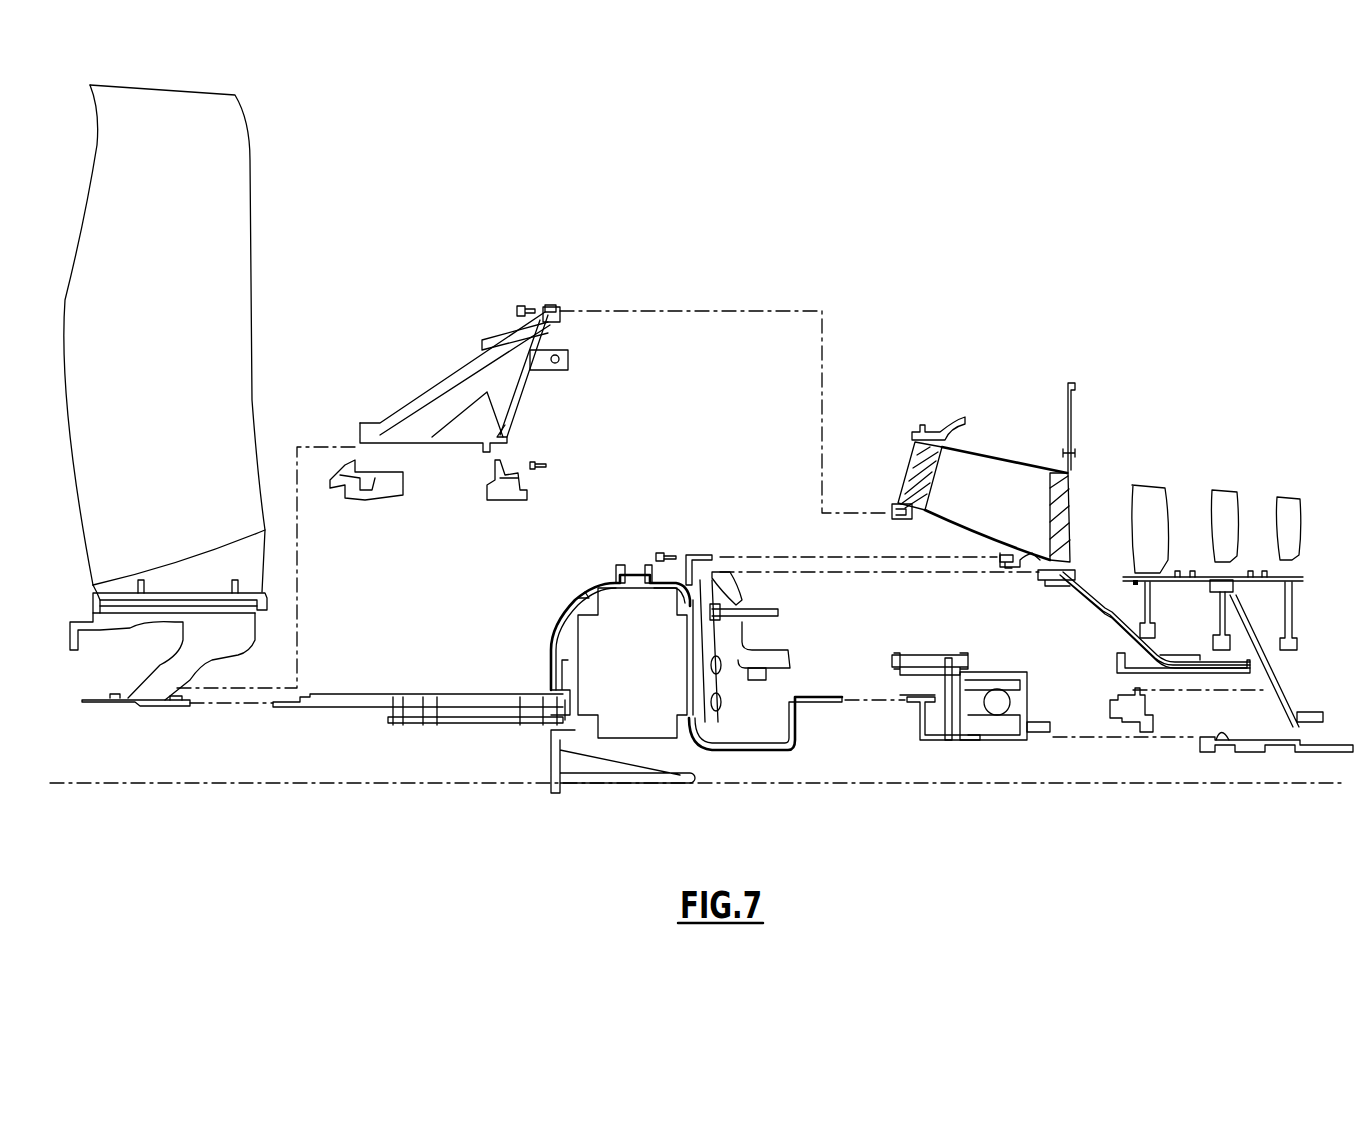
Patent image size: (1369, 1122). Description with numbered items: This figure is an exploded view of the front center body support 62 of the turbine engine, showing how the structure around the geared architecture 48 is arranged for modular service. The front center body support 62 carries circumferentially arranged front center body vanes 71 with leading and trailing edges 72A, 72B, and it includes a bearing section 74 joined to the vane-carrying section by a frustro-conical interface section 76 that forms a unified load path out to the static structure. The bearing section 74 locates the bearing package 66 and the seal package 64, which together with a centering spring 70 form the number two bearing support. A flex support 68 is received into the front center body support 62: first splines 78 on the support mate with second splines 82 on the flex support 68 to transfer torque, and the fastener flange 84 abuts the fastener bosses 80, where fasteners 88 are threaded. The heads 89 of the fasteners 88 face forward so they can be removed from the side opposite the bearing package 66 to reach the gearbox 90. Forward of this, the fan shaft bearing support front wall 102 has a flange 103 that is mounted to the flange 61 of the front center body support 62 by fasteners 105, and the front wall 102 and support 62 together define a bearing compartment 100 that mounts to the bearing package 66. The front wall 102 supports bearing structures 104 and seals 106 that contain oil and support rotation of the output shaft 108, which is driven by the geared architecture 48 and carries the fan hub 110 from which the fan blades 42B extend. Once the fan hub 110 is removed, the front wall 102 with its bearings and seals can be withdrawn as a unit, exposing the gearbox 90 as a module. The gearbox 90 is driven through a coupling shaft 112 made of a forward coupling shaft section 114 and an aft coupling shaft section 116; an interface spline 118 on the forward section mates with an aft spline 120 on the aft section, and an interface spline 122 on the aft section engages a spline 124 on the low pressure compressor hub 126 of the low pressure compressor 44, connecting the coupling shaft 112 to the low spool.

The fan blades 42B is at (180, 347).
The low pressure compressor 44 is at (1207, 472).
The geared architecture 48 is at (598, 679).
The flange 61 is at (895, 503).
The front center body support 62 is at (1000, 455).
The seal package 64 is at (1136, 743).
The bearing package 66 is at (1003, 753).
The flex support 68 is at (778, 641).
The centering spring 70 is at (903, 688).
The front center body vanes 71 is at (898, 449).
The leading edge 72A is at (920, 446).
The trailing edge 72B is at (1075, 485).
The bearing section 74 is at (1117, 605).
The frustro-conical interface section 76 is at (1111, 620).
The first splines 78 is at (1048, 580).
The fastener bosses 80 is at (1005, 565).
The second splines 82 is at (735, 570).
The fastener flange 84 is at (694, 555).
The fasteners 88 is at (662, 553).
The heads 89 is at (656, 556).
The gearbox 90 is at (652, 672).
The bearing compartment 100 is at (798, 397).
The fan shaft bearing support front wall 102 is at (447, 375).
The flange 103 is at (556, 306).
The bearing structures 104 is at (505, 497).
The fasteners 105 is at (530, 306).
The seals 106 is at (350, 490).
The output shaft 108 is at (348, 703).
The fan hub 110 is at (193, 653).
The coupling shaft 112 is at (751, 762).
The forward coupling shaft section 114 is at (790, 752).
The aft coupling shaft section 116 is at (955, 745).
The interface spline 118 is at (818, 702).
The aft spline 120 is at (913, 708).
The interface spline 122 is at (1022, 743).
The spline 124 is at (1223, 733).
The low pressure compressor hub 126 is at (1291, 746).